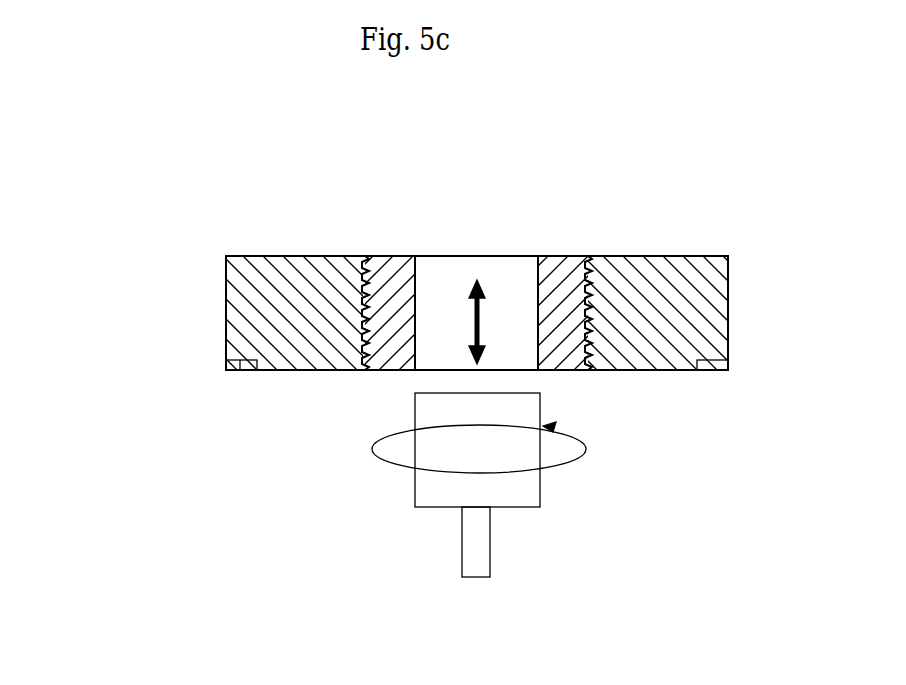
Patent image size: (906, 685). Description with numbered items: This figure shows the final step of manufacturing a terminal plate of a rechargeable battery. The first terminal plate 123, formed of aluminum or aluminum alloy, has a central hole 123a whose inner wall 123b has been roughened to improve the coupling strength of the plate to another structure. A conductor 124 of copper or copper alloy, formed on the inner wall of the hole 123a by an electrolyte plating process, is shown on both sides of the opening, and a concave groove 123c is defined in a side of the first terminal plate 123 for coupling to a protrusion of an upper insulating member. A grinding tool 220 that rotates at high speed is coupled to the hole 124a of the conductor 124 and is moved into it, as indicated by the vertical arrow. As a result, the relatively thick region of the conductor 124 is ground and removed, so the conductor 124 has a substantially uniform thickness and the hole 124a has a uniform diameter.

The first terminal plate 123 is at (297, 282).
The conductor 124 is at (397, 273).
The hole of the conductor 124a is at (538, 307).
The hole 123a is at (588, 312).
The inner wall 123b is at (598, 322).
The concave groove 123c is at (238, 370).
The grinding tool 220 is at (532, 488).